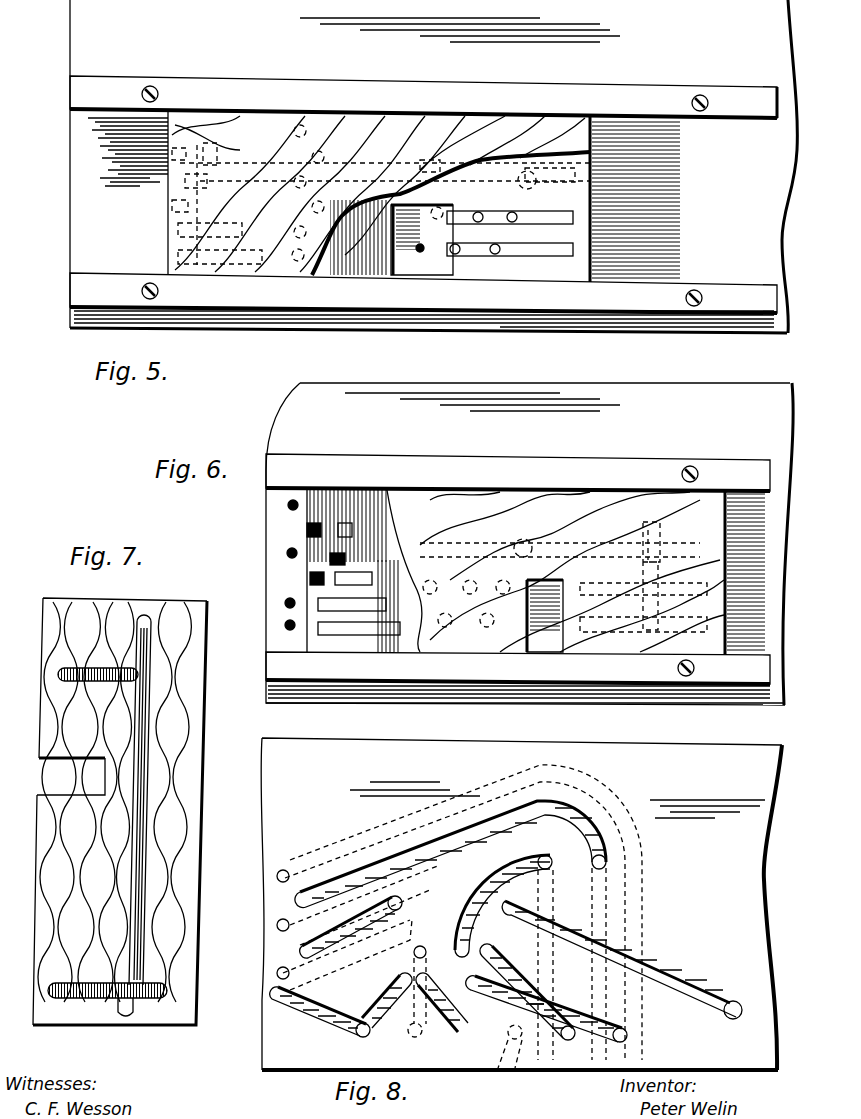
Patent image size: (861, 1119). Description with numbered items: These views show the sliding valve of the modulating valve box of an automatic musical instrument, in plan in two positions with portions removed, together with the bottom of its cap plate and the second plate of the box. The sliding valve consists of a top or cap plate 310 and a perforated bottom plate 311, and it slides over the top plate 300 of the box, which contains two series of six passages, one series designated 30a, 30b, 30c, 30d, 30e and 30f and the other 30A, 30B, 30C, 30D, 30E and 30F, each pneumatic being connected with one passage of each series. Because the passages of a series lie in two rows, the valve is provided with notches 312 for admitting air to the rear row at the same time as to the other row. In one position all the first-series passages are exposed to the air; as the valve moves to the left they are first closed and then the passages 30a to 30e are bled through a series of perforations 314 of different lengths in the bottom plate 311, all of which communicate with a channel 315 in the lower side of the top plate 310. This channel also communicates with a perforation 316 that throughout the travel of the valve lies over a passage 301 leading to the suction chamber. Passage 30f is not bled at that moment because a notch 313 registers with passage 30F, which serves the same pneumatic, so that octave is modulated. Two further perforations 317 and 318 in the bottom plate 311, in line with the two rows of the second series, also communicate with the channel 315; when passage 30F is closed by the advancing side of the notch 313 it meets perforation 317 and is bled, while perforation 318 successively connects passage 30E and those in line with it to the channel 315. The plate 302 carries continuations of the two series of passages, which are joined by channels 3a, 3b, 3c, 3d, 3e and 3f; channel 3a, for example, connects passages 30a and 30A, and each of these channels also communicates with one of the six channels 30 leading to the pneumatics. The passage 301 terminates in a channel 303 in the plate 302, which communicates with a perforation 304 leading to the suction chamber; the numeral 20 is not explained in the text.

In FIG. 8, the leader reference 20 is at (355, 1035).
In FIG. 8, the channels 30 is at (415, 1038).
In FIG. 5, the top plate 300 is at (401, 166).
In FIG. 6, the top plate 300 is at (529, 544).
In FIG. 5, the passage 301 is at (530, 170).
In FIG. 6, the passage 301 is at (560, 530).
In FIG. 8, the plate 302 is at (521, 904).
In FIG. 8, the channel 303 is at (655, 962).
In FIG. 8, the perforation 304 is at (730, 1019).
In FIG. 5, the top or cap plate 310 is at (235, 140).
In FIG. 7, the top or cap plate 310 is at (128, 1020).
In FIG. 5, the perforated bottom plate 311 is at (565, 270).
In FIG. 5, the notches 312 is at (168, 170).
In FIG. 6, the notches 312 is at (318, 520).
In FIG. 6, the notch 313 is at (560, 630).
In FIG. 7, the notch 313 is at (72, 770).
In FIG. 5, the perforations 314 is at (292, 268).
In FIG. 6, the perforations 314 is at (350, 545).
In FIG. 5, the channel 315 is at (225, 125).
In FIG. 6, the channel 315 is at (655, 560).
In FIG. 7, the channel 315 is at (152, 834).
In FIG. 5, the perforation 316 is at (560, 160).
In FIG. 6, the perforation 316 is at (735, 480).
In FIG. 6, the perforation 317 is at (600, 635).
In FIG. 6, the perforation 318 is at (705, 625).
In FIG. 5, the passage 30a is at (297, 262).
In FIG. 6, the passage 30a is at (285, 628).
In FIG. 8, the passage 30a is at (272, 993).
In FIG. 5, the passage 30b is at (305, 240).
In FIG. 6, the passage 30b is at (285, 605).
In FIG. 8, the passage 30b is at (277, 973).
In FIG. 6, the passage 30c is at (308, 578).
In FIG. 8, the passage 30c is at (300, 955).
In FIG. 5, the passage 30d is at (322, 150).
In FIG. 6, the passage 30d is at (287, 554).
In FIG. 8, the passage 30d is at (280, 920).
In FIG. 5, the passage 30e is at (320, 200).
In FIG. 6, the passage 30e is at (305, 528).
In FIG. 8, the passage 30e is at (305, 895).
In FIG. 5, the passage 30f is at (299, 125).
In FIG. 6, the passage 30f is at (288, 505).
In FIG. 8, the passage 30f is at (285, 870).
In FIG. 5, the passage 30A is at (418, 252).
In FIG. 6, the passage 30A is at (446, 628).
In FIG. 8, the passage 30A is at (395, 985).
In FIG. 5, the passage 30B is at (320, 180).
In FIG. 6, the passage 30B is at (432, 578).
In FIG. 8, the passage 30B is at (421, 945).
In FIG. 5, the passage 30C is at (355, 258).
In FIG. 6, the passage 30C is at (488, 628).
In FIG. 8, the passage 30C is at (445, 968).
In FIG. 5, the passage 30D is at (478, 212).
In FIG. 6, the passage 30D is at (470, 578).
In FIG. 8, the passage 30D is at (440, 940).
In FIG. 5, the passage 30E is at (497, 252).
In FIG. 6, the passage 30E is at (505, 600).
In FIG. 8, the passage 30E is at (500, 1040).
In FIG. 5, the passage 30F is at (512, 212).
In FIG. 6, the passage 30F is at (505, 595).
In FIG. 8, the passage 30F is at (505, 948).
In FIG. 8, the channel 3a is at (320, 1010).
In FIG. 8, the channel 3b is at (362, 975).
In FIG. 8, the channel 3c is at (375, 930).
In FIG. 8, the channel 3d is at (505, 854).
In FIG. 8, the channel 3e is at (572, 828).
In FIG. 8, the channel 3f is at (528, 800).